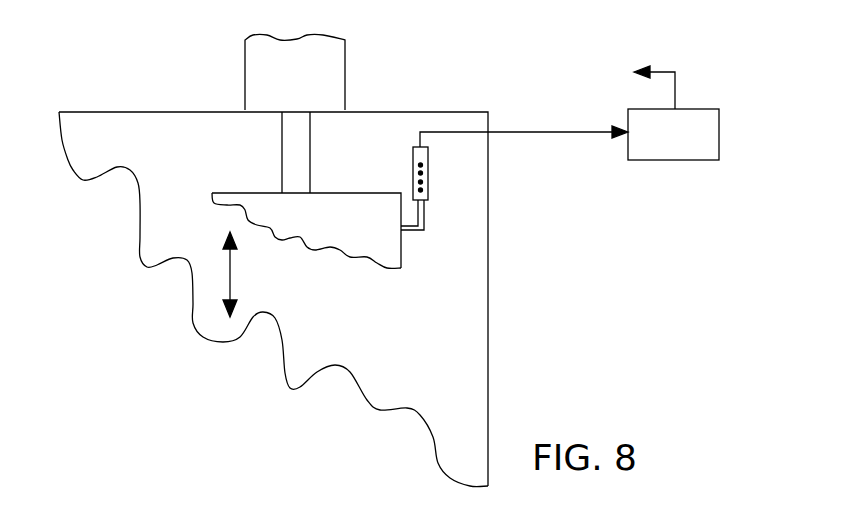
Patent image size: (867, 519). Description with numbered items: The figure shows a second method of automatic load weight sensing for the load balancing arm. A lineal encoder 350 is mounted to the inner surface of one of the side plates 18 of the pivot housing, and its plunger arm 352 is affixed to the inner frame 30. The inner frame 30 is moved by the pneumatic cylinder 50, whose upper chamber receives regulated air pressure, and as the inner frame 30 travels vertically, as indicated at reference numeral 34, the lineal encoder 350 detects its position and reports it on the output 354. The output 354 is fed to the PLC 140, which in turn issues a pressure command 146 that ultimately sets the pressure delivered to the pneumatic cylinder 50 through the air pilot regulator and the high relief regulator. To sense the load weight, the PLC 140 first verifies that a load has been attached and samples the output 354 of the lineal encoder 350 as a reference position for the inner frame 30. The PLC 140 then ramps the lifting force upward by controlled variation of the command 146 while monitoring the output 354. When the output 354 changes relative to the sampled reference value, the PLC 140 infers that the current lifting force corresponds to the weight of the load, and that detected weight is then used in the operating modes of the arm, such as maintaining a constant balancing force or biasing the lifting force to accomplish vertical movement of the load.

The side plate 18 is at (477, 352).
The inner frame 30 is at (233, 192).
The vertical movement 34 is at (228, 283).
The pneumatic cylinder 50 is at (345, 87).
The PLC 140 is at (691, 140).
The pressure command 146 is at (676, 98).
The lineal encoder 350 is at (451, 171).
The plunger arm 352 is at (424, 215).
The output 354 is at (532, 132).